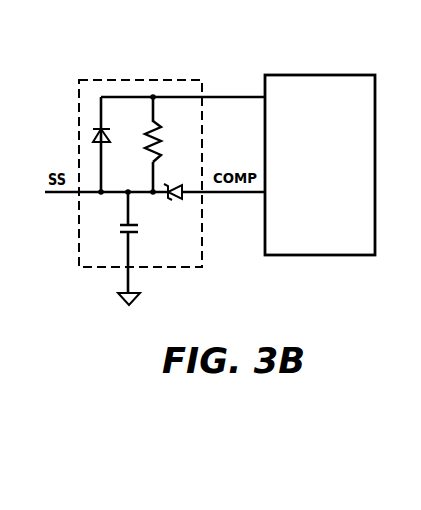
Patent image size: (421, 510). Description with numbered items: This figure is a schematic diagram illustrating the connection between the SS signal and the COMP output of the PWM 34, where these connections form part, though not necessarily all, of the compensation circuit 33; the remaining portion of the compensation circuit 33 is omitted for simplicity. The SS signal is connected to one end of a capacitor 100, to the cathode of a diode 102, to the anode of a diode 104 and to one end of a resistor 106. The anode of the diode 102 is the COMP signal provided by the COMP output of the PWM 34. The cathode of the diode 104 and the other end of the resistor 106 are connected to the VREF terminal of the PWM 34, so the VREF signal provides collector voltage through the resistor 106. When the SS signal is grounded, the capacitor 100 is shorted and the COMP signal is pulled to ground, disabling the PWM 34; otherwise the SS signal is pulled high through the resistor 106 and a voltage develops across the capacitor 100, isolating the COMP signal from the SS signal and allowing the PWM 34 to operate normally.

The compensation circuit 33 is at (125, 78).
The PWM 34 is at (335, 75).
The capacitor 100 is at (139, 233).
The diode 102 is at (171, 201).
The diode 104 is at (109, 138).
The resistor 106 is at (162, 141).